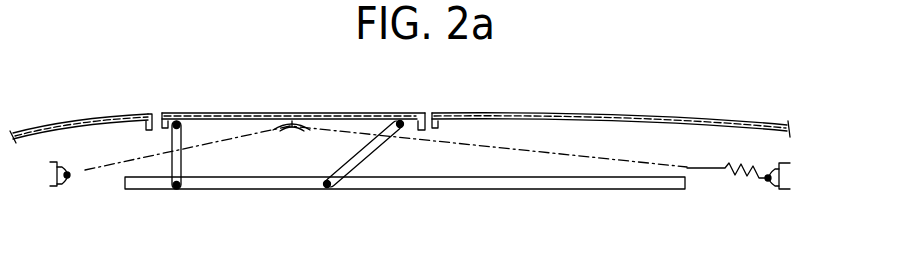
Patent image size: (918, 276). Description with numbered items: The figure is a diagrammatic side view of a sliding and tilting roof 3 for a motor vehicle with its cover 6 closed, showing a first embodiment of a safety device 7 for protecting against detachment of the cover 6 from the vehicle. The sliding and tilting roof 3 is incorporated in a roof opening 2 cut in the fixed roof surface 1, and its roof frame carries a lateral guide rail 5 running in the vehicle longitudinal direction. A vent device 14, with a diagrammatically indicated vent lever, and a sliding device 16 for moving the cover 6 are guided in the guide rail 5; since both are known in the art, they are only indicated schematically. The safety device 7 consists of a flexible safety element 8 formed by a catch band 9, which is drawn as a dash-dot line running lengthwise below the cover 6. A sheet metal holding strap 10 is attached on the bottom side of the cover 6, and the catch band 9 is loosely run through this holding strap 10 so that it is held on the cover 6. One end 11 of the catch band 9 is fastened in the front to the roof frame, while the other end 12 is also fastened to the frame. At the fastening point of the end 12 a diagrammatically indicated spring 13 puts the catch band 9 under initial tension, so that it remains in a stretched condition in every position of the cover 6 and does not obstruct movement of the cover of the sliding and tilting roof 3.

The fixed roof surface 1 is at (108, 113).
The roof opening 2 is at (426, 113).
The sliding and tilting roof 3 is at (190, 106).
The guide rail 5 is at (460, 186).
The cover 6 is at (318, 113).
The safety device 7 is at (248, 146).
The flexible safety element 8 is at (553, 170).
The catch band 9 is at (497, 148).
The holding strap 10 is at (291, 130).
The catch band end 11 is at (78, 169).
The catch band end 12 is at (728, 171).
The spring 13 is at (756, 181).
The vent device 14 is at (379, 172).
The sliding device 16 is at (164, 194).